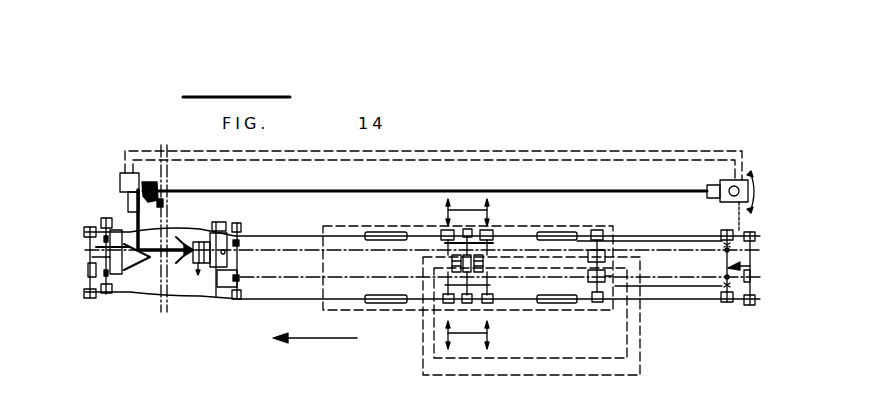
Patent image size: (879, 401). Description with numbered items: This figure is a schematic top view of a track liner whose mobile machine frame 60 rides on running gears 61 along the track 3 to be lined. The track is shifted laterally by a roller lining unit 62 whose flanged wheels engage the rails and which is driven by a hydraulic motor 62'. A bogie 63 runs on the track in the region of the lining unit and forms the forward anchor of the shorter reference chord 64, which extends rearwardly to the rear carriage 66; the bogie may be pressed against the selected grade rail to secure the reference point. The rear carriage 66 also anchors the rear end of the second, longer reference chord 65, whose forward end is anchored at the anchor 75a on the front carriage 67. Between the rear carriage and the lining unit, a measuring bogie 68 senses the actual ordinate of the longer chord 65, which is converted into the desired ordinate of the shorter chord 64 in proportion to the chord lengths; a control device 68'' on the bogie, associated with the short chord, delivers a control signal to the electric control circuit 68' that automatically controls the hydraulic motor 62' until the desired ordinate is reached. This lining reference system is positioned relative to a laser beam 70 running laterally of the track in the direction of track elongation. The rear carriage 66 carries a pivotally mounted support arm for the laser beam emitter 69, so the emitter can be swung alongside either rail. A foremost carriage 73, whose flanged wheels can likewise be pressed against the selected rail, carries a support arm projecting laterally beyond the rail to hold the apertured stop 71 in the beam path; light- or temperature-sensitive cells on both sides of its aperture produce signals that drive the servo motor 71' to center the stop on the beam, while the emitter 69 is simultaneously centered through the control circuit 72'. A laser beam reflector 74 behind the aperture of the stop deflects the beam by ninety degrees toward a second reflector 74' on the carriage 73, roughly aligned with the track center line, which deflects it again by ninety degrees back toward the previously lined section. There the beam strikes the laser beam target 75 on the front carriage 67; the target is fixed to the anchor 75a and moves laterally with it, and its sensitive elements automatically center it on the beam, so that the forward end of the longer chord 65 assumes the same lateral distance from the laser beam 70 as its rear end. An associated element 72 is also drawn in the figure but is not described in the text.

The track 3 is at (279, 297).
The mobile machine frame 60 is at (357, 305).
The running gears 61 is at (397, 304).
The roller lining unit 62 is at (519, 316).
The hydraulic motor 62' is at (506, 307).
The bogie 63 is at (465, 304).
The shorter reference chord 64 is at (657, 281).
The longer reference chord 65 is at (677, 249).
The rear carriage 66 is at (727, 303).
The front carriage 67 is at (237, 290).
The measuring bogie 68 is at (606, 344).
The electric control circuit 68' is at (485, 298).
The control device 68'' is at (617, 247).
The laser beam emitter 69 is at (741, 183).
The laser beam 70 is at (624, 184).
The apertured stop 71 is at (171, 207).
The servo motor 71' is at (139, 160).
The coil 72 is at (163, 186).
The control circuit 72' is at (433, 154).
The foremost carriage 73 is at (105, 293).
The laser beam reflector 74 is at (119, 197).
The second reflector 74' is at (159, 270).
The laser beam target 75 is at (180, 272).
The anchor 75a is at (223, 240).